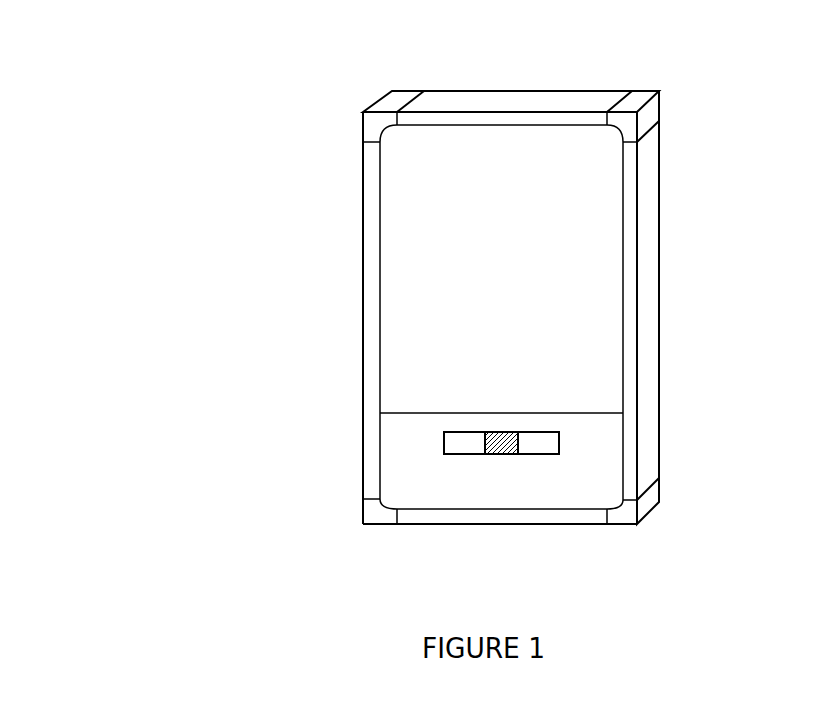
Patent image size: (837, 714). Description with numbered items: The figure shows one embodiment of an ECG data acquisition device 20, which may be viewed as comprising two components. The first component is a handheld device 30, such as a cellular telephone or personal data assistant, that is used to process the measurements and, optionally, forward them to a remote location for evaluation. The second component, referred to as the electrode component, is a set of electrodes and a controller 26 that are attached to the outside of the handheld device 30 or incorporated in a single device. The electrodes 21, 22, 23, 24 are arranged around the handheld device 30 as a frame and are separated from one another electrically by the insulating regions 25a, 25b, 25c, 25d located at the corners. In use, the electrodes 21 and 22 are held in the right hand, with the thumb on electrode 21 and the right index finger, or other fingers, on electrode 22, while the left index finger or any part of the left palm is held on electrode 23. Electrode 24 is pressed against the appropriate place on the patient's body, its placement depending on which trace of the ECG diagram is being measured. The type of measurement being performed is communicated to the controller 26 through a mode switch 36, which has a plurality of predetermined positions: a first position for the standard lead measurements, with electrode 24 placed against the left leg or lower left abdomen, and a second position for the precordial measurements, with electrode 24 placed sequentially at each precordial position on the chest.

The ECG data acquisition device 20 is at (222, 70).
The electrode 21 is at (650, 203).
The electrode 22 is at (364, 284).
The electrode 23 is at (557, 93).
The electrode 24 is at (515, 523).
The insulating region 25a is at (382, 101).
The insulating region 25b is at (650, 112).
The insulating region 25c is at (628, 524).
The insulating region 25d is at (365, 523).
The controller 26 is at (612, 472).
The handheld device 30 is at (515, 352).
The mode switch 36 is at (559, 445).